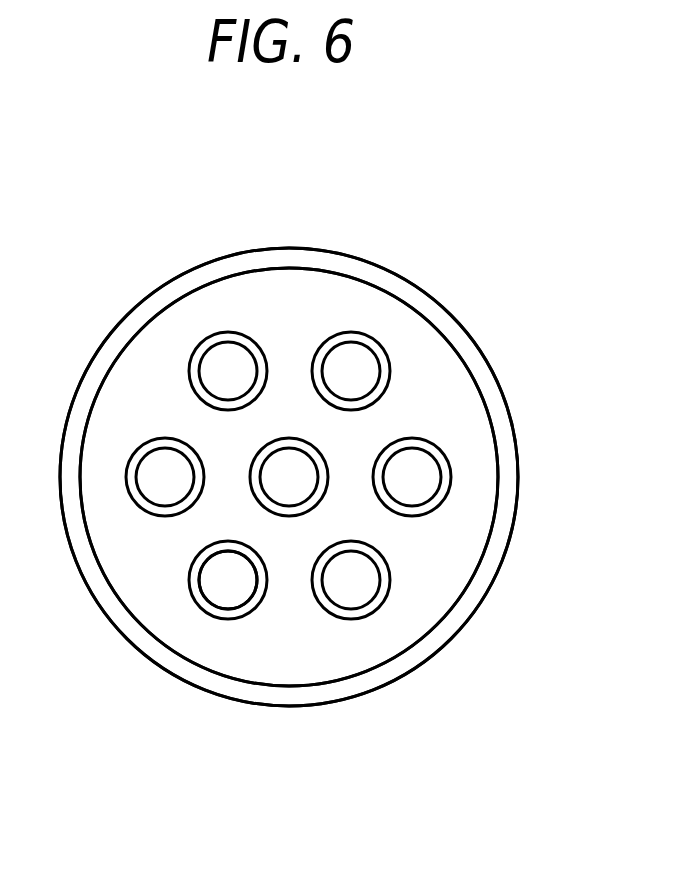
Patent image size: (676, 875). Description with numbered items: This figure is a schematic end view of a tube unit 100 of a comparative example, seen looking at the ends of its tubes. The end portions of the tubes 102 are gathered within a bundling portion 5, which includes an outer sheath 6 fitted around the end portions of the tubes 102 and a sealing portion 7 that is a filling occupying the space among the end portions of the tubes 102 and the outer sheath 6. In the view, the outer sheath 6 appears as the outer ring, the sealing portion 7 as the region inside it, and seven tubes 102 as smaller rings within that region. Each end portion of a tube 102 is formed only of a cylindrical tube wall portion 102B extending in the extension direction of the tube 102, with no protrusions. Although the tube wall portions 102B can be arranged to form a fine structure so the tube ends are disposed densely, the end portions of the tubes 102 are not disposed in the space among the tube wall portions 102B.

The tube unit 100 is at (489, 228).
The bundling portion 5 is at (285, 248).
The outer sheath 6 is at (250, 260).
The sealing portion 7 is at (227, 302).
The tube 102 is at (191, 588).
The tube wall portion 102B is at (255, 600).